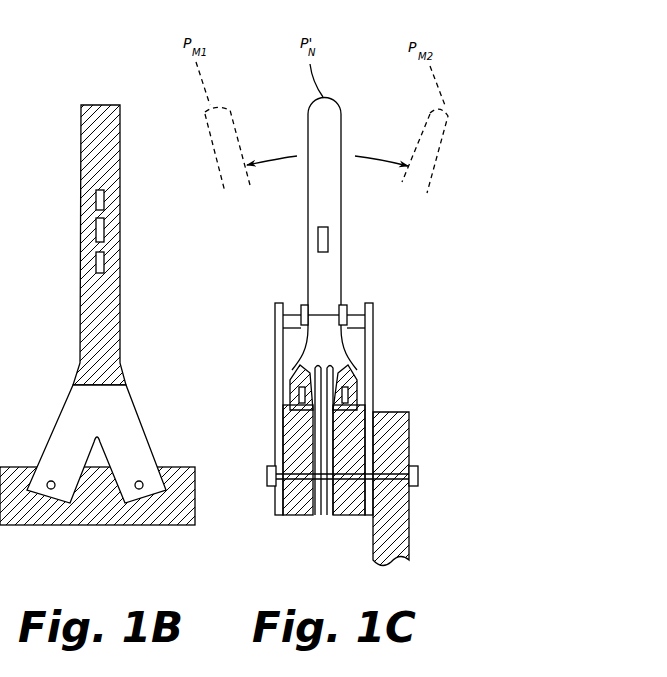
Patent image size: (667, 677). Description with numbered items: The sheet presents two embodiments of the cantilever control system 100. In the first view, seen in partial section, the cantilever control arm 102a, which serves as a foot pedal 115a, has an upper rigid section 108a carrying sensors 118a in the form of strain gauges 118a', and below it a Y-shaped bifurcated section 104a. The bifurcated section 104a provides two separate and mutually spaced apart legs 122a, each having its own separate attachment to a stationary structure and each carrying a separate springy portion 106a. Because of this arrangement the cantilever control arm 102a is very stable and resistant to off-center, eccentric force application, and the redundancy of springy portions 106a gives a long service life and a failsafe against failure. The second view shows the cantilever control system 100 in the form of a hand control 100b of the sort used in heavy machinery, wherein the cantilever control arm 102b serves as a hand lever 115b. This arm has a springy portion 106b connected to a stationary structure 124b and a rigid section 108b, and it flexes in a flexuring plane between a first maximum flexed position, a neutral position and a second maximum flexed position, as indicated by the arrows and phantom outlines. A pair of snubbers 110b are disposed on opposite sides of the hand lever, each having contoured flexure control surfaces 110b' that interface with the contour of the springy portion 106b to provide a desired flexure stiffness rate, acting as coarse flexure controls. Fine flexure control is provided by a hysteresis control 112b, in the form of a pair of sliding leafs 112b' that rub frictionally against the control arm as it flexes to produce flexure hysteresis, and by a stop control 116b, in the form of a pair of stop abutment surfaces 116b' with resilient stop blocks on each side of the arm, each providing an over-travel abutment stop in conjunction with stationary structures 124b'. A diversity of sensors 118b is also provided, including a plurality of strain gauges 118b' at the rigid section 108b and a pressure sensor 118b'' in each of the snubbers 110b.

In FIG. 1C, the cantilever control system 100 is at (337, 213).
In FIG. 1C, the hand control 100b is at (337, 213).
In FIG. 1B, the cantilever control arm 102a is at (114, 245).
In FIG. 1C, the cantilever control arm 102b is at (337, 213).
In FIG. 1B, the bifurcated section 104a is at (101, 433).
In FIG. 1B, the springy portion 106a is at (47, 428).
In FIG. 1C, the springy portion 106b is at (320, 353).
In FIG. 1B, the rigid section 108a is at (68, 275).
In FIG. 1C, the rigid section 108b is at (303, 208).
In FIG. 1C, the snubbers 110b is at (320, 353).
In FIG. 1C, the flexure control surfaces 110b' is at (320, 353).
In FIG. 1C, the hysteresis control 112b is at (332, 441).
In FIG. 1C, the sliding leafs 112b' is at (332, 441).
In FIG. 1B, the foot pedal 115a is at (68, 245).
In FIG. 1C, the hand lever 115b is at (283, 213).
In FIG. 1C, the stop control 116b is at (335, 298).
In FIG. 1C, the stop abutment surfaces 116b' is at (335, 298).
In FIG. 1B, the sensors 118a is at (52, 231).
In FIG. 1B, the strain gauges 118a' is at (52, 231).
In FIG. 1C, the sensors 118b is at (294, 304).
In FIG. 1C, the strain gauges 118b' is at (294, 304).
In FIG. 1C, the pressure sensor 118b'' is at (284, 385).
In FIG. 1B, the legs 122a is at (88, 458).
In FIG. 1C, the stationary structure 124b is at (356, 419).
In FIG. 1C, the stationary structures 124b' is at (356, 393).